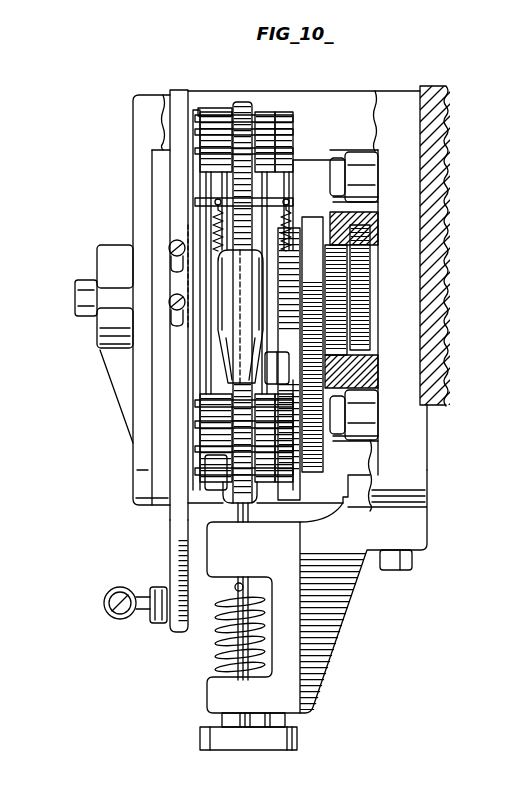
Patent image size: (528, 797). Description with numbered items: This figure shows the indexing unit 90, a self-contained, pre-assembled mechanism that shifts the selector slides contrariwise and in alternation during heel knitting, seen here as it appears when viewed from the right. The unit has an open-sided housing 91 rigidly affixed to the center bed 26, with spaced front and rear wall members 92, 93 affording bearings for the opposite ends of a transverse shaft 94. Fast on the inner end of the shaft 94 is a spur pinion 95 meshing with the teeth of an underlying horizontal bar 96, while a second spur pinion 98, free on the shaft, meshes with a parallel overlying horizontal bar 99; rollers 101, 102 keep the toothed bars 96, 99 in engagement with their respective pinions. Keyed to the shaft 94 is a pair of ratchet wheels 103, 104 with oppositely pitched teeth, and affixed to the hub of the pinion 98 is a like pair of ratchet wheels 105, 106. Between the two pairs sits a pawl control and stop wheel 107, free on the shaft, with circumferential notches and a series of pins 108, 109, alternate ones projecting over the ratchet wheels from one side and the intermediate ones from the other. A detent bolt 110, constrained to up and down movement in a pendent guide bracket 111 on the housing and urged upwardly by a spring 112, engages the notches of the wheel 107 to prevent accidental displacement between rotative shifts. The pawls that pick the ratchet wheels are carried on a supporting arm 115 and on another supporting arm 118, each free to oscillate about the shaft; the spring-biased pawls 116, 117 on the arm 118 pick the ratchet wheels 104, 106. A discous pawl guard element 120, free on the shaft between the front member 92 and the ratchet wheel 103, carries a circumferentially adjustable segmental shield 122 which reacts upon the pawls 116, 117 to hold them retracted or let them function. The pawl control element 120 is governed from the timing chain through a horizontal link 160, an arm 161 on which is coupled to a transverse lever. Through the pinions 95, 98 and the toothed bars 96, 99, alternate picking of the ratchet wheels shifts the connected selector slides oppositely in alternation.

The center bed 26 is at (447, 130).
The indexing unit 90 is at (120, 65).
The housing 91 is at (338, 88).
The front wall member 92 is at (137, 416).
The rear wall member 93 is at (408, 225).
The transverse shaft 94 is at (78, 295).
The spur pinion 95 is at (352, 323).
The horizontal bar 96 is at (368, 362).
The spur pinion 98 is at (342, 278).
The horizontal bar 99 is at (365, 238).
The roller 101 is at (360, 410).
The roller 102 is at (356, 186).
The ratchet wheel 103 is at (197, 110).
The ratchet wheel 104 is at (226, 125).
The ratchet wheel 105 is at (266, 118).
The ratchet wheel 106 is at (290, 120).
The pawl control and stop wheel 107 is at (245, 100).
The pins 108 is at (210, 112).
The pins 109 is at (283, 153).
The detent bolt 110 is at (242, 512).
The guide bracket 111 is at (347, 623).
The spring 112 is at (217, 657).
The supporting arm 115 is at (316, 240).
The pawl 116 is at (223, 340).
The pawl 117 is at (290, 372).
The supporting arm 118 is at (310, 225).
The pawl guard element 120 is at (175, 193).
The segmental shield 122 is at (200, 270).
The horizontal link 160 is at (118, 588).
The arm 161 is at (170, 532).